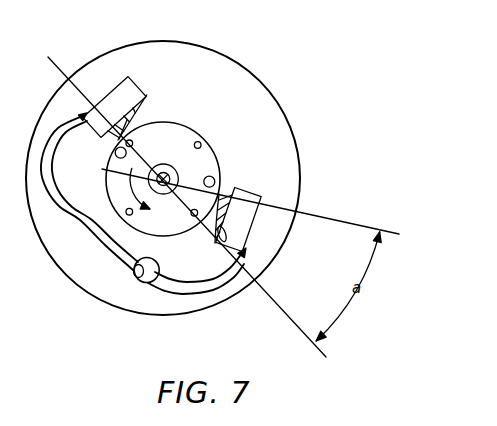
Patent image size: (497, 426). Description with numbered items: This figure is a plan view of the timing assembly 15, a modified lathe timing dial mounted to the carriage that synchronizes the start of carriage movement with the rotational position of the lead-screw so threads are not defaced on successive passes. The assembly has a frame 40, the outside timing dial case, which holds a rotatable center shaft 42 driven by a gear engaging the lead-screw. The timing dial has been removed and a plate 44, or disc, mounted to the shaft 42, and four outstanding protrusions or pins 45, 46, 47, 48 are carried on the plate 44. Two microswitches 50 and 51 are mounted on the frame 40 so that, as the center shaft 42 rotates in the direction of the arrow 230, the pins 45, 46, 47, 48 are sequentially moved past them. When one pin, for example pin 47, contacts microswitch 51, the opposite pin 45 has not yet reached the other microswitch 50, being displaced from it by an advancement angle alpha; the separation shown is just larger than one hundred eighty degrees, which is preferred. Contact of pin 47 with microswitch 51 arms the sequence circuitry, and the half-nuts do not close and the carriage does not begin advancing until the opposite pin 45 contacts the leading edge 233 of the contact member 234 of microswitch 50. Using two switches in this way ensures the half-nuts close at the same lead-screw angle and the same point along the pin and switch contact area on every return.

The timing assembly 15 is at (198, 35).
The frame 40 is at (279, 106).
The center shaft 42 is at (163, 164).
The plate 44 is at (186, 127).
The pin 45 is at (191, 214).
The pin 46 is at (201, 143).
The pin 47 is at (132, 141).
The pin 48 is at (126, 210).
The microswitch 50 is at (242, 217).
The microswitch 51 is at (117, 98).
The arrow 230 is at (231, 197).
The leading edge 233 is at (215, 181).
The contact member 234 is at (220, 248).